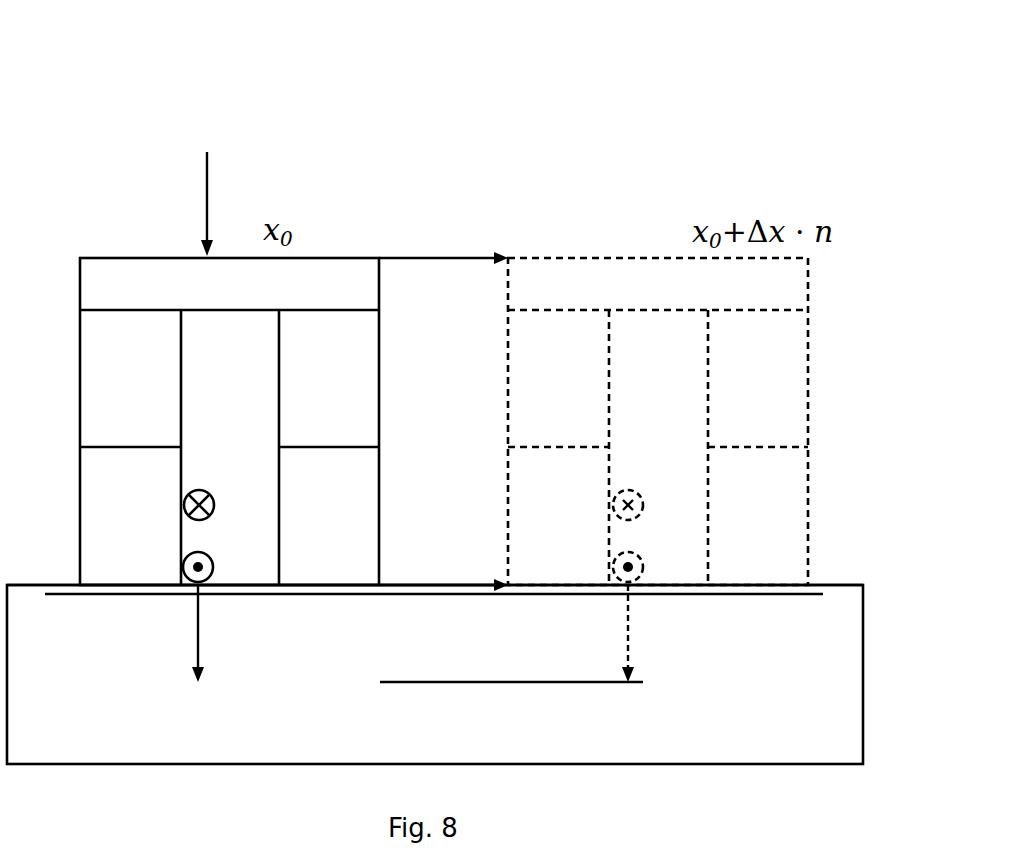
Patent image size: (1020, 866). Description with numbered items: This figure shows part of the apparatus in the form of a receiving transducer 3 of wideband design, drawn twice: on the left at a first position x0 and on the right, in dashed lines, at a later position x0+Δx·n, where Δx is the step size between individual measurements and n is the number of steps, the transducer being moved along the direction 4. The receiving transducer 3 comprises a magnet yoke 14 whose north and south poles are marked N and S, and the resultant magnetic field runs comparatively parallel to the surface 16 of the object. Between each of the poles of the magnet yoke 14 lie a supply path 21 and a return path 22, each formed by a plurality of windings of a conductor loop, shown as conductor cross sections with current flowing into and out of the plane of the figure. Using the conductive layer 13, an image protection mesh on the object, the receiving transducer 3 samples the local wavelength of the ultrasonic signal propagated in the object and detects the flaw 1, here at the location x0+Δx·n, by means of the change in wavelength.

The flaw 1 is at (540, 684).
The receiving transducer 3 is at (150, 126).
The direction 4 is at (440, 260).
The conductive layer 13 is at (743, 596).
The magnet yoke 14 is at (208, 176).
The surface of the object 16 is at (837, 584).
The supply path 21 is at (215, 563).
The return path 22 is at (199, 488).